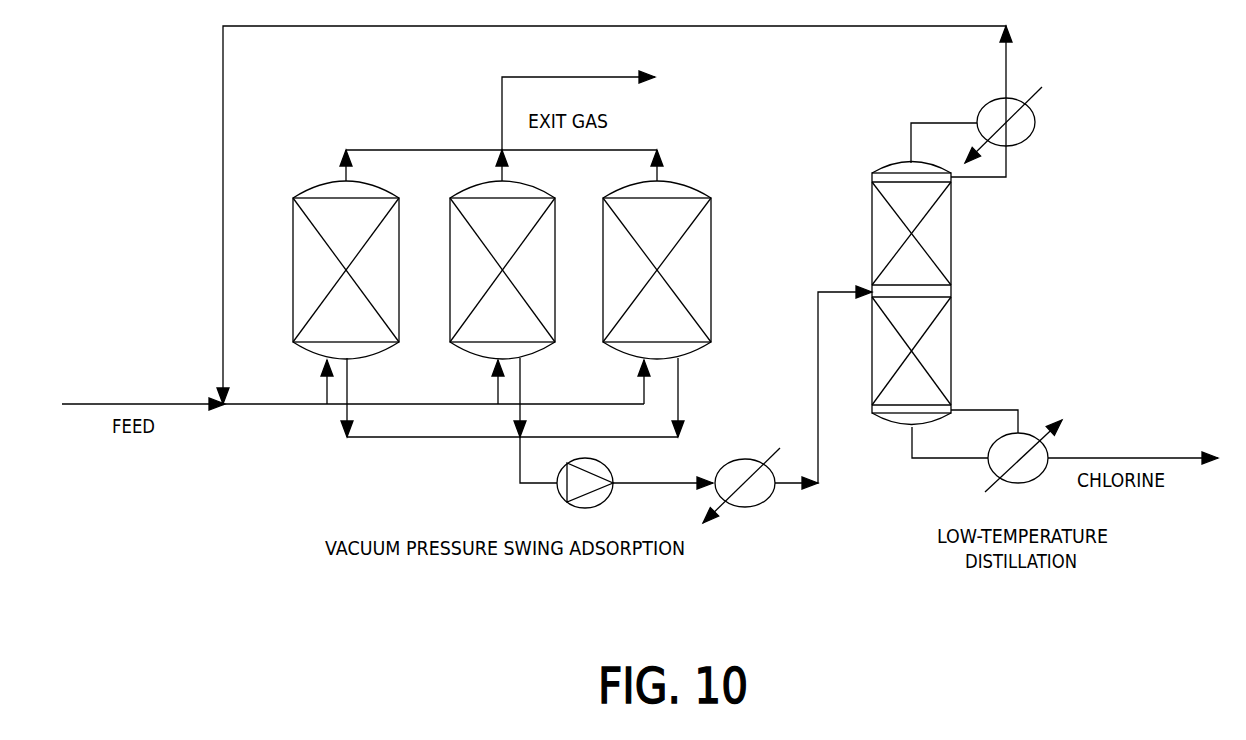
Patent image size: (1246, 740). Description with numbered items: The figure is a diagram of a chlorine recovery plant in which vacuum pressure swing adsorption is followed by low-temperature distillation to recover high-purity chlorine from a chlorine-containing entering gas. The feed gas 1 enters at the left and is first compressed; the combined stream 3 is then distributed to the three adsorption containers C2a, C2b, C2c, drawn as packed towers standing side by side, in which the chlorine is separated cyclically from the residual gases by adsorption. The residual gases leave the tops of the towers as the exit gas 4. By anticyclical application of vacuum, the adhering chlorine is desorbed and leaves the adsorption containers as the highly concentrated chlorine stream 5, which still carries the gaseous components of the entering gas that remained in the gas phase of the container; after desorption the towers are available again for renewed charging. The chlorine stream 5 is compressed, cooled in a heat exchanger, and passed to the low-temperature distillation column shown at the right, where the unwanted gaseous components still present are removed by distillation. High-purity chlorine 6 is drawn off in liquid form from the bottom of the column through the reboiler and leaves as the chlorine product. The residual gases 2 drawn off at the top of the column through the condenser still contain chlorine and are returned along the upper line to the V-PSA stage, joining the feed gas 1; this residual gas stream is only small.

The feed gas 1 is at (143, 393).
The residual gases 2 is at (608, 215).
The combined feed stream to vacuum pressure swing adsorption beds 3 is at (437, 382).
The exit gas stream 4 is at (578, 110).
The highly concentrated chlorine 5 is at (663, 473).
The high-purity chlorine 6 is at (1133, 445).
The container C2a is at (365, 270).
The container C2b is at (521, 270).
The container C2c is at (676, 270).